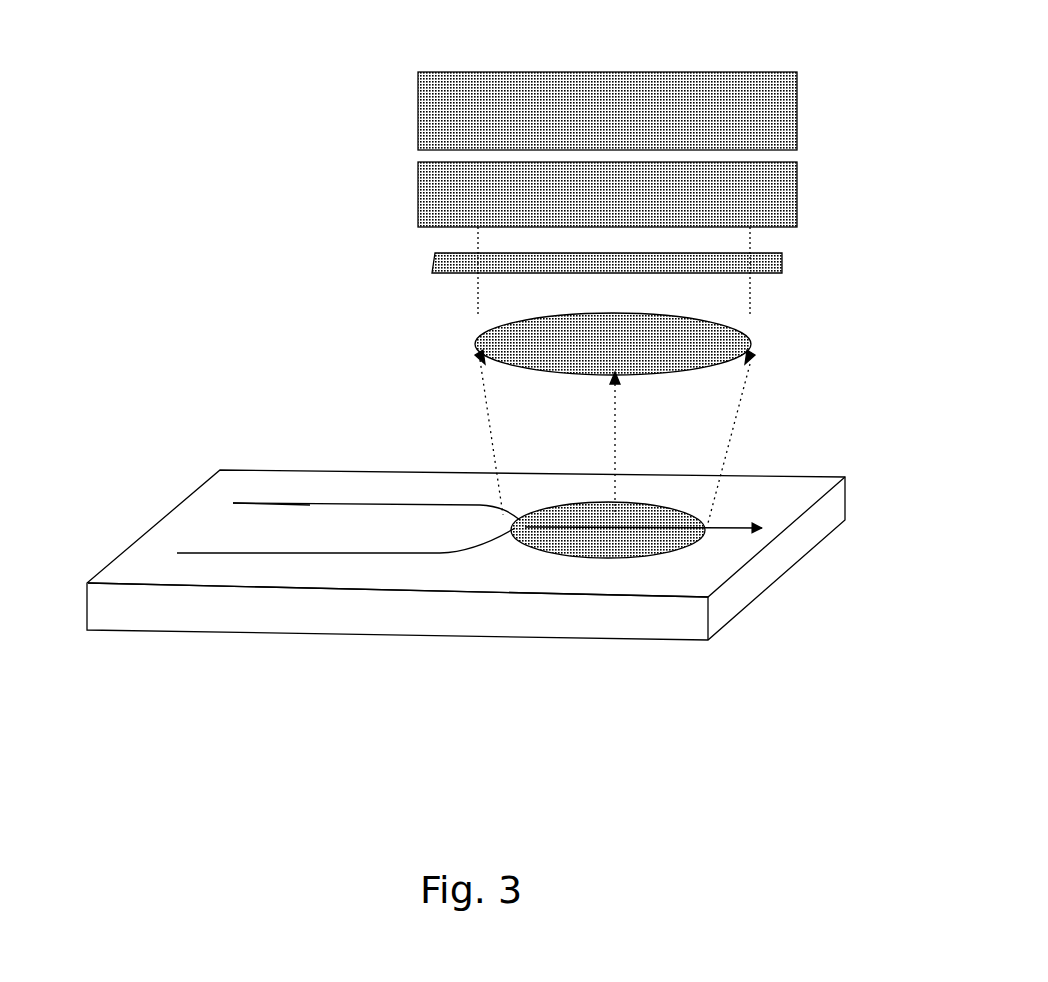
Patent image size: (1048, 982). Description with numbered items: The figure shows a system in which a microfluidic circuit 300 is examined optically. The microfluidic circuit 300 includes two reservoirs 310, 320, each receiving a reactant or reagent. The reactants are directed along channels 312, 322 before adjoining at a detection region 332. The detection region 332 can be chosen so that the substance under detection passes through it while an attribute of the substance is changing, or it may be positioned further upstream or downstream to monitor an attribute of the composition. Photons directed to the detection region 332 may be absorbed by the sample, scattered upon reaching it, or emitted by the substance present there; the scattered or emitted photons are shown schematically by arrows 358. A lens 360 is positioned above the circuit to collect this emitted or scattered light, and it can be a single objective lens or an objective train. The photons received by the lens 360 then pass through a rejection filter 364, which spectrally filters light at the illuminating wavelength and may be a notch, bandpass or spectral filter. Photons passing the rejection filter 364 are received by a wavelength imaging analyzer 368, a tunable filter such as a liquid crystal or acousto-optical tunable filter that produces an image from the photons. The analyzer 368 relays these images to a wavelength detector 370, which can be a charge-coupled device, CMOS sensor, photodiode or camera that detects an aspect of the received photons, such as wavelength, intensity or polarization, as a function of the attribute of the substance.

The microfluidic circuit 300 is at (845, 520).
The reservoir 310 is at (215, 506).
The channel 312 is at (310, 505).
The reservoir 320 is at (113, 570).
The channel 322 is at (220, 558).
The detection region 332 is at (610, 545).
The arrows 358 is at (733, 412).
The optical lens 360 is at (750, 347).
The rejection filter 364 is at (782, 260).
The wavelength imaging analyzer 368 is at (797, 197).
The wavelength detector 370 is at (797, 78).